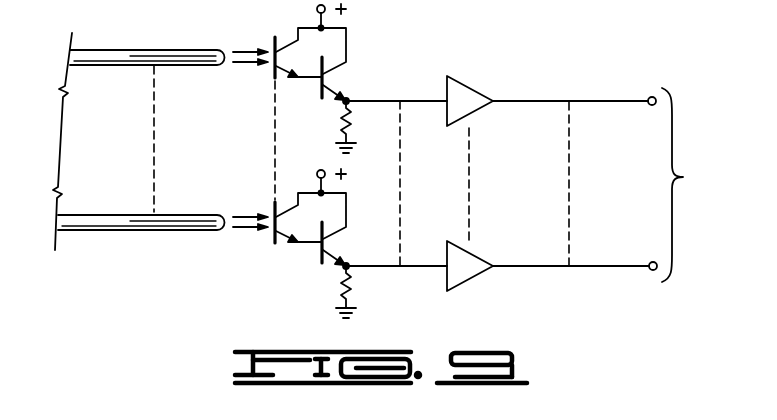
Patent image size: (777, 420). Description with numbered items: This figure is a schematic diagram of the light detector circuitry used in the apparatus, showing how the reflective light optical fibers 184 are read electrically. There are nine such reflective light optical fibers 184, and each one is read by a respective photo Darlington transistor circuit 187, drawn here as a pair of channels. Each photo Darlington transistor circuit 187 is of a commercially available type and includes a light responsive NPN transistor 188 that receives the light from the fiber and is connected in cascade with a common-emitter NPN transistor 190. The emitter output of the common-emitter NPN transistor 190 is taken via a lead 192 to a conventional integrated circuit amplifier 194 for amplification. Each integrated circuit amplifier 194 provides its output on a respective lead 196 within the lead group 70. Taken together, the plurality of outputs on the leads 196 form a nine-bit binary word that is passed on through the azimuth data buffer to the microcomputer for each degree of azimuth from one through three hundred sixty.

The lead group 70 is at (688, 185).
The reflective light optical fiber 184 is at (118, 50).
The photo Darlington transistor circuit 187 is at (362, 38).
The light responsive NPN transistor 188 is at (287, 42).
The common-emitter NPN transistor 190 is at (326, 77).
The lead 192 is at (386, 100).
The integrated circuit amplifier 194 is at (468, 82).
The lead 196 is at (584, 100).